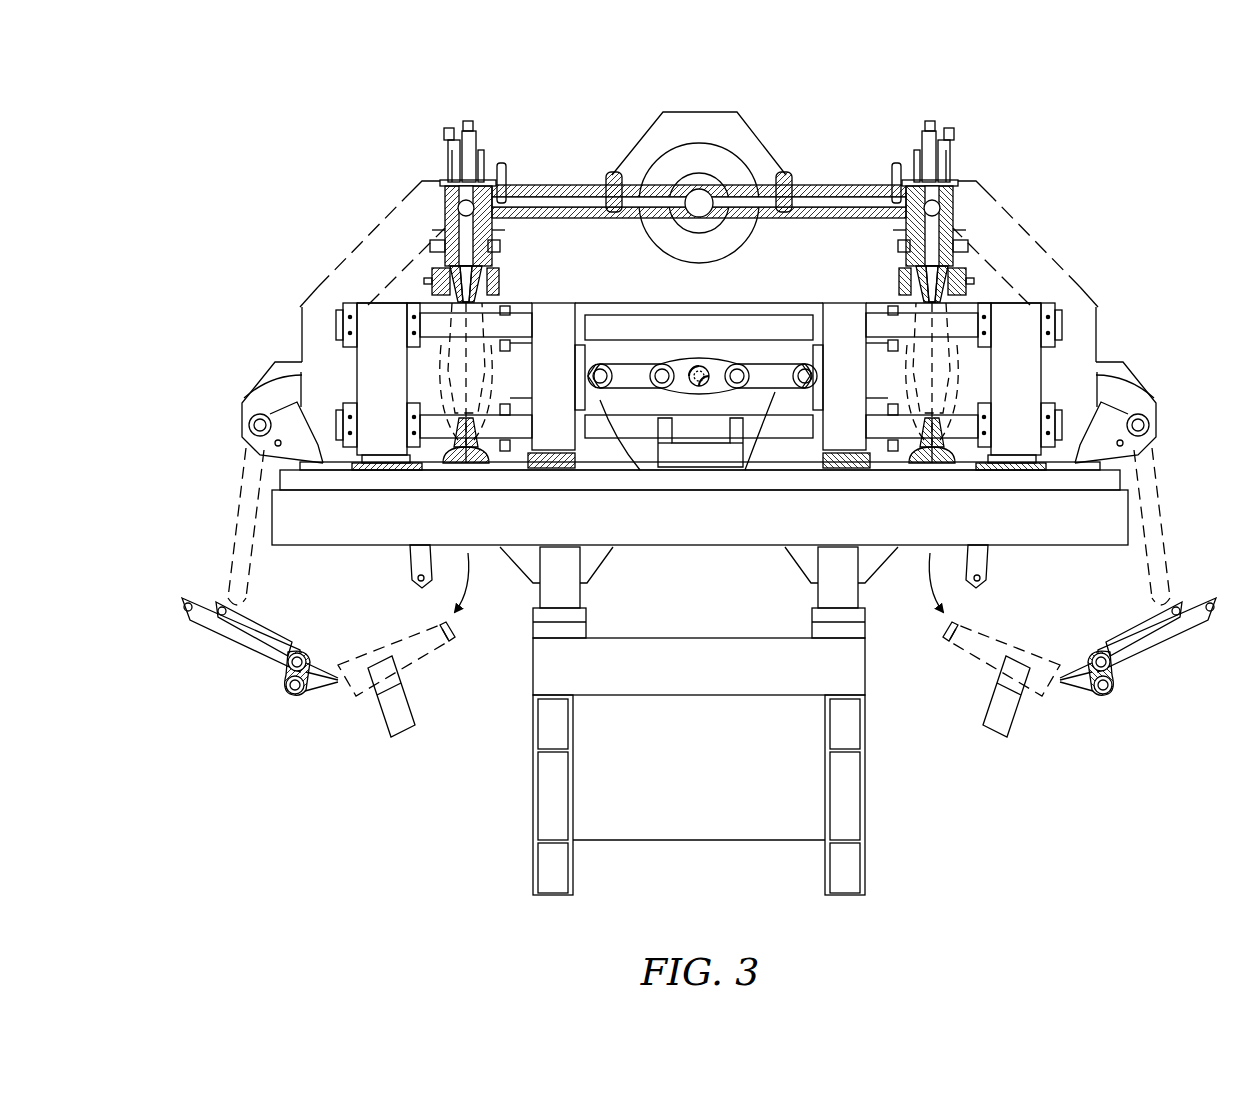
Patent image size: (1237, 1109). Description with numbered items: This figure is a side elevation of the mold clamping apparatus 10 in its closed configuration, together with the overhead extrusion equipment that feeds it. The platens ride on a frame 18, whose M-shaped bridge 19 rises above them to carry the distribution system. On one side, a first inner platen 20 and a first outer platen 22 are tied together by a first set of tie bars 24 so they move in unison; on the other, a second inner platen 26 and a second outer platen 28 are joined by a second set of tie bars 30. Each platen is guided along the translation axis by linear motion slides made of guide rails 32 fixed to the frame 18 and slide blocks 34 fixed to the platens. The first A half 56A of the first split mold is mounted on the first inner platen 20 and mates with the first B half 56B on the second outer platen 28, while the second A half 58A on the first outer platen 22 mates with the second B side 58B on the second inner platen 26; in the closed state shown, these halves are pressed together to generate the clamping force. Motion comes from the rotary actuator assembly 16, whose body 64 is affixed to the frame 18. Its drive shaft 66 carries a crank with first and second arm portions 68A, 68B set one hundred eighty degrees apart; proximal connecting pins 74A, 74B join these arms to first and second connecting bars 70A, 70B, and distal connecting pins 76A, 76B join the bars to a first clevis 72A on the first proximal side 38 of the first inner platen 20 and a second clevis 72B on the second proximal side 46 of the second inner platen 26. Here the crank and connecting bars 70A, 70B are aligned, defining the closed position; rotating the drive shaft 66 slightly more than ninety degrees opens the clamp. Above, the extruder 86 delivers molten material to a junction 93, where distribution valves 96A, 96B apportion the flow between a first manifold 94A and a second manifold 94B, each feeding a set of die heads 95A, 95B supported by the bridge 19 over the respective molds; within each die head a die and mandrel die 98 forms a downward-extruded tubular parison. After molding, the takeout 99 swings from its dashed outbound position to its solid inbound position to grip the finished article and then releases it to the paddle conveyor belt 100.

The mold clamping apparatus 10 is at (1112, 162).
The actuator assembly 16 is at (700, 345).
The frame 18 is at (848, 662).
The bridge 19 is at (312, 268).
The first inner platen 20 is at (845, 350).
The first outer platen 22 is at (243, 401).
The first set of tie bars 24 is at (336, 318).
The second inner platen 26 is at (556, 350).
The second outer platen 28 is at (1155, 401).
The second set of tie bars 30 is at (1062, 325).
The guide rails 32 is at (330, 492).
The slide blocks 34 is at (385, 480).
The first proximal side 38 is at (800, 350).
The second proximal side 46 is at (592, 330).
The first A half 56A is at (932, 390).
The first B half 56B is at (958, 390).
The second A half 58A is at (450, 390).
The second B side 58B is at (468, 440).
The body 64 is at (700, 455).
The drive shaft 66 is at (712, 362).
The first arm portion 68A is at (706, 368).
The second arm portion 68B is at (690, 366).
The first connecting bar 70A is at (780, 380).
The second connecting bar 70B is at (618, 380).
The first clevis 72A is at (790, 392).
The second clevis 72B is at (610, 392).
The proximal connecting pin 74A is at (745, 470).
The proximal connecting pin 74B is at (640, 470).
The distal connecting pin 76A is at (805, 388).
The distal connecting pin 76B is at (600, 388).
The extruder 86 is at (688, 145).
The junction 93 is at (620, 188).
The first manifold 94A is at (893, 180).
The second manifold 94B is at (505, 180).
The first set of die heads 95A is at (965, 200).
The second set of die heads 95B is at (438, 200).
The distribution valve 96A is at (786, 172).
The distribution valve 96B is at (612, 172).
The die and mandrel die 98 is at (456, 272).
The takeout 99 is at (318, 698).
The paddle conveyor belt 100 is at (400, 735).
The tool outline A is at (430, 660).